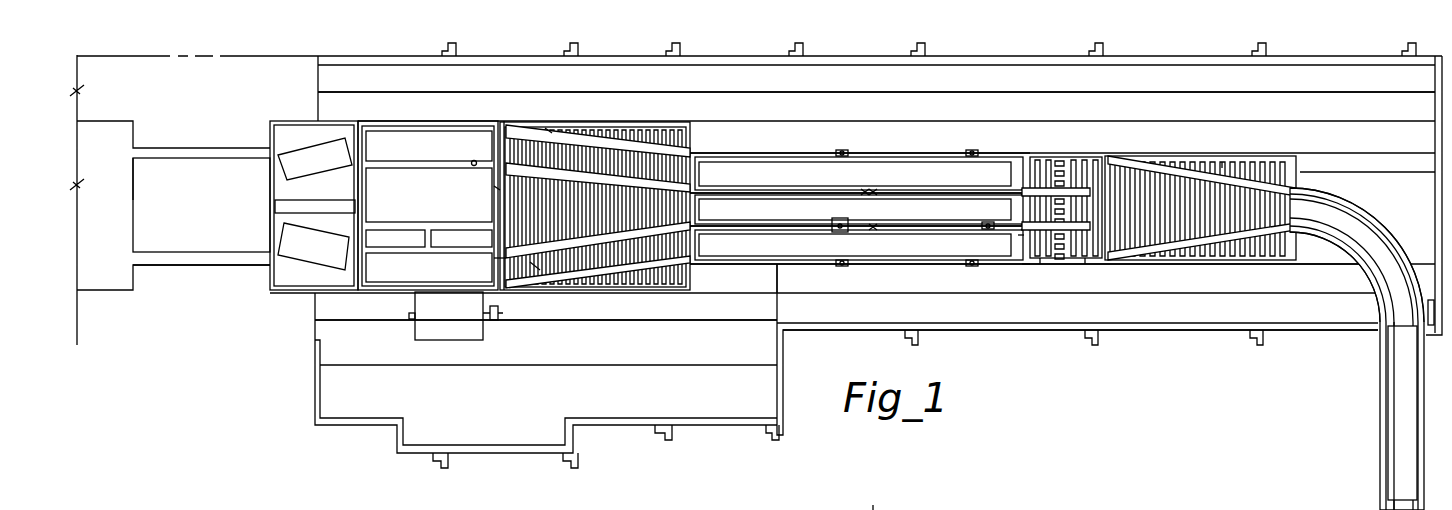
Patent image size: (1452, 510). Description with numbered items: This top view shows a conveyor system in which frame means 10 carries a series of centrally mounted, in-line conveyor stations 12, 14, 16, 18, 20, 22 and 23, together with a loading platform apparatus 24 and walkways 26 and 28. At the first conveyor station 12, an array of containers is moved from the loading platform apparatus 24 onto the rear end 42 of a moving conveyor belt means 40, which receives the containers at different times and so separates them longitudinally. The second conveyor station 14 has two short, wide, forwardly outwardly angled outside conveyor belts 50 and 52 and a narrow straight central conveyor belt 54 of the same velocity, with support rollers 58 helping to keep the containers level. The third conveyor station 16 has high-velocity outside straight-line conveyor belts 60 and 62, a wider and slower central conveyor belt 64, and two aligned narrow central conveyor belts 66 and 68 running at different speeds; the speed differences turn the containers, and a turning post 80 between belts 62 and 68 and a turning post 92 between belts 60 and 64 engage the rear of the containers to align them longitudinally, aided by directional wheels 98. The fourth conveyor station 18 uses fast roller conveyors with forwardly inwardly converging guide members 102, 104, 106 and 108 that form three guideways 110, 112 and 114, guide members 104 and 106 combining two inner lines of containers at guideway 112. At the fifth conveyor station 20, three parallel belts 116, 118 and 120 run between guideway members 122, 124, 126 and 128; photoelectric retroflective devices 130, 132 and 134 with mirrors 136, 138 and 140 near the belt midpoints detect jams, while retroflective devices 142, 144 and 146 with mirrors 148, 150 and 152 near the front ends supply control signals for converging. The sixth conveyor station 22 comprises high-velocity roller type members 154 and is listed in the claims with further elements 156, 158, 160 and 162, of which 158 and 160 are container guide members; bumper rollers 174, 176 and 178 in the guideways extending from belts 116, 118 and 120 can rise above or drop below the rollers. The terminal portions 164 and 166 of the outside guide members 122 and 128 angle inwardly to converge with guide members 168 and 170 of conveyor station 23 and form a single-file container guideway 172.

The frame means 10 is at (841, 55).
The first conveyor station 12 is at (202, 266).
The second conveyor station 14 is at (293, 294).
The third conveyor station 16 is at (392, 293).
The fourth conveyor station 18 is at (598, 292).
The fifth conveyor station 20 is at (820, 268).
The sixth conveyor station 22 is at (1170, 268).
The conveyor station 23 is at (1376, 199).
The loading platform apparatus 24 is at (114, 229).
The walkway 26 is at (823, 121).
The walkway 28 is at (578, 348).
The conveyor belt means 40 is at (234, 222).
The rear end 42 is at (135, 204).
The outside conveyor belt 50 is at (322, 171).
The outside conveyor belt 52 is at (320, 258).
The central conveyor belt 54 is at (315, 207).
The support rollers 58 is at (487, 509).
The outside conveyor belt 60 is at (408, 156).
The outside conveyor belt 62 is at (415, 273).
The central conveyor belt 64 is at (438, 191).
The central conveyor belt 66 is at (408, 231).
The central conveyor belt 68 is at (470, 231).
The turning post 80 is at (500, 259).
The turning post 92 is at (474, 161).
The directional wheels 98 is at (873, 509).
The guide member 102 is at (580, 133).
The guide member 104 is at (618, 183).
The guide member 106 is at (653, 233).
The guide member 108 is at (615, 274).
The guideway 110 is at (548, 128).
The guideway 112 is at (497, 188).
The guideway 114 is at (535, 266).
The conveyor belt 116 is at (803, 181).
The conveyor belt 118 is at (785, 218).
The conveyor belt 120 is at (793, 253).
The guideway member 122 is at (747, 154).
The guideway member 124 is at (735, 191).
The guideway member 126 is at (732, 226).
The guideway member 128 is at (745, 265).
The photoelectric retroflective device 130 is at (845, 151).
The photoelectric retroflective device 132 is at (837, 223).
The photoelectric retroflective device 134 is at (842, 267).
The mirror 136 is at (865, 189).
The mirror 138 is at (873, 190).
The mirror 140 is at (873, 229).
The retroflective device 142 is at (971, 151).
The retroflective device 144 is at (981, 225).
The retroflective device 146 is at (967, 267).
The mirror 148 is at (1022, 190).
The mirror 150 is at (1022, 226).
The mirror 152 is at (1022, 235).
The roller type members 154 is at (1028, 266).
The sixth conveyor means element 156 is at (1078, 181).
The container guide member 158 is at (1096, 186).
The container guide member 160 is at (1110, 262).
The sixth conveyor means element 162 is at (1086, 265).
The terminal portion 164 is at (1222, 166).
The terminal portion 166 is at (1318, 268).
The guide member 168 is at (1341, 182).
The guide member 170 is at (1340, 233).
The single file container guideway 172 is at (1386, 249).
The bumper roller 174 is at (1046, 190).
The bumper roller 176 is at (1053, 224).
The bumper roller 178 is at (1042, 265).